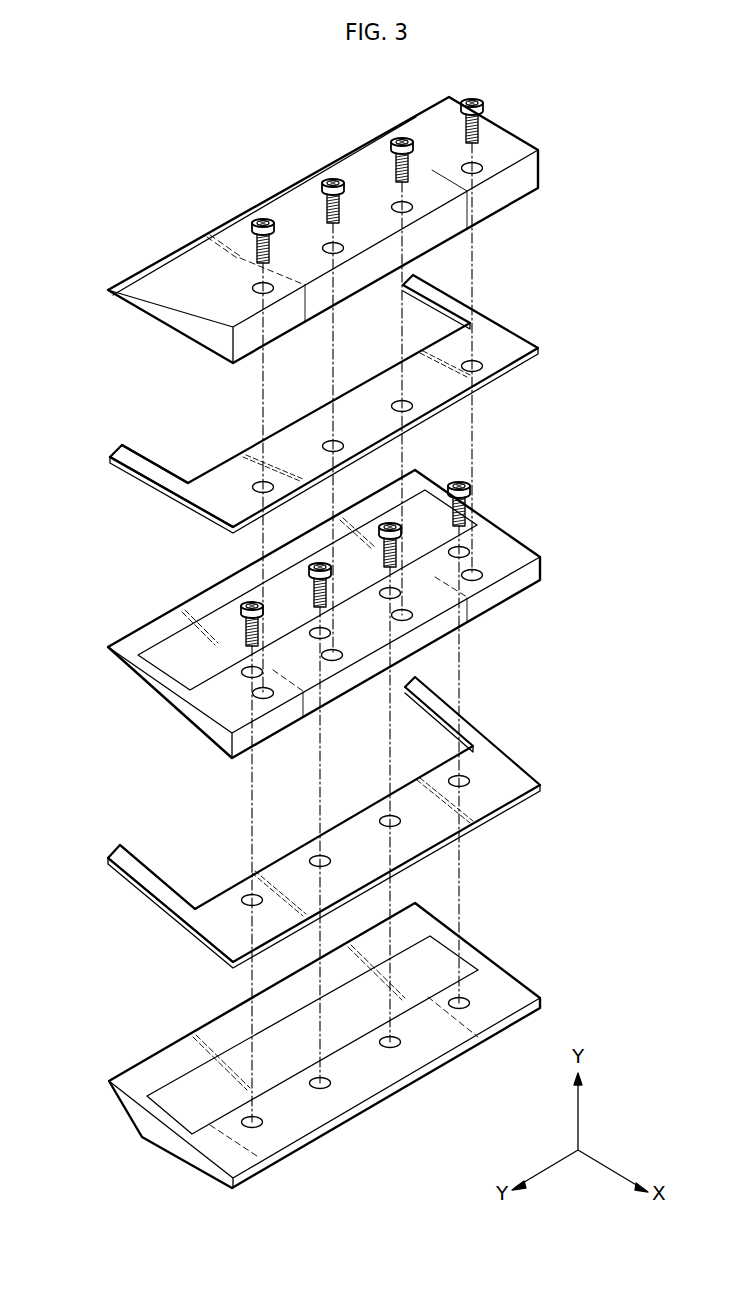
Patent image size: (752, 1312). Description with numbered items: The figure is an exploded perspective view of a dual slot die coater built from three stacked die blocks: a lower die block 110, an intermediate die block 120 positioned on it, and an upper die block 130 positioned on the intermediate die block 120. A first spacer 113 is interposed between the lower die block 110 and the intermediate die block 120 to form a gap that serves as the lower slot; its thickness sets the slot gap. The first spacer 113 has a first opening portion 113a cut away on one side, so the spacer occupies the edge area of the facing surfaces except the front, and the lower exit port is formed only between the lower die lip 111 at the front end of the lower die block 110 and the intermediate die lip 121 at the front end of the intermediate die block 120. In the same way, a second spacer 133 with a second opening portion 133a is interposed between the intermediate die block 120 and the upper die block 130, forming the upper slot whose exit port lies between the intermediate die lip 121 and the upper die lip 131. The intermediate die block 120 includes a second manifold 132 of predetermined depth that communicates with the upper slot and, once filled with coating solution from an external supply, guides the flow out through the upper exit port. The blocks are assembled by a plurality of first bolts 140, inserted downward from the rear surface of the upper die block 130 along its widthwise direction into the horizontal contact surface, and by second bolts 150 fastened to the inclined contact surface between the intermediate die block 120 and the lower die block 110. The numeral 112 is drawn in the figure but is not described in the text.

The lower die block 110 is at (362, 1032).
The lower die lip 111 is at (172, 1052).
The recess of first block 112 is at (440, 965).
The first spacer 113 is at (316, 822).
The first opening portion 113a is at (207, 847).
The intermediate die block 120 is at (361, 598).
The intermediate die lip 121 is at (190, 600).
The upper die block 130 is at (361, 230).
The upper die lip 131 is at (166, 254).
The second manifold 132 is at (430, 532).
The second spacer 133 is at (317, 404).
The second opening portion 133a is at (195, 441).
The first bolt 140 is at (262, 217).
The second bolt 150 is at (248, 603).